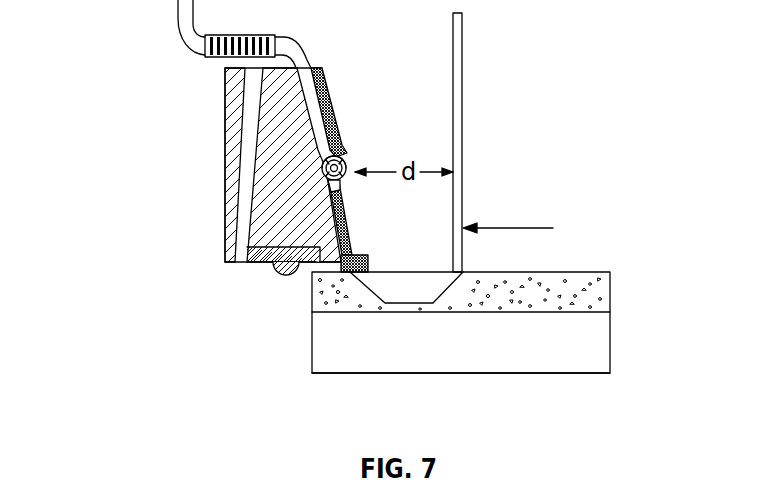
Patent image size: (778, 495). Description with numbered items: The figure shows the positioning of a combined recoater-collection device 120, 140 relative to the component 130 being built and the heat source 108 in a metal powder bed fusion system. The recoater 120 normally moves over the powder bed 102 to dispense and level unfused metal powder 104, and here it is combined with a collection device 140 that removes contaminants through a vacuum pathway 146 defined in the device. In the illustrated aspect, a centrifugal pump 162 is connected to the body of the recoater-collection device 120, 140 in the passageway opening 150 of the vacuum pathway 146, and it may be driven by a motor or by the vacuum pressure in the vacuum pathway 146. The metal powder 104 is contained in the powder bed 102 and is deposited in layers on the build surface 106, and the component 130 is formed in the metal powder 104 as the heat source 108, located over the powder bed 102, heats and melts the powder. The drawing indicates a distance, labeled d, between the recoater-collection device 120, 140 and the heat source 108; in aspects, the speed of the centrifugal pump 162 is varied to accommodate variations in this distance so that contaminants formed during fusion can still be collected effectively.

The recoater 120 is at (346, 150).
The collection device 140 is at (140, 78).
The vacuum pathway 146 is at (304, 103).
The centrifugal pump 162 is at (347, 161).
The passageway opening 150 is at (344, 183).
The heat source 108 is at (461, 137).
The metal powder 104 is at (567, 291).
The powder bed 102 is at (611, 290).
The build surface 106 is at (589, 328).
The component 130 is at (398, 287).